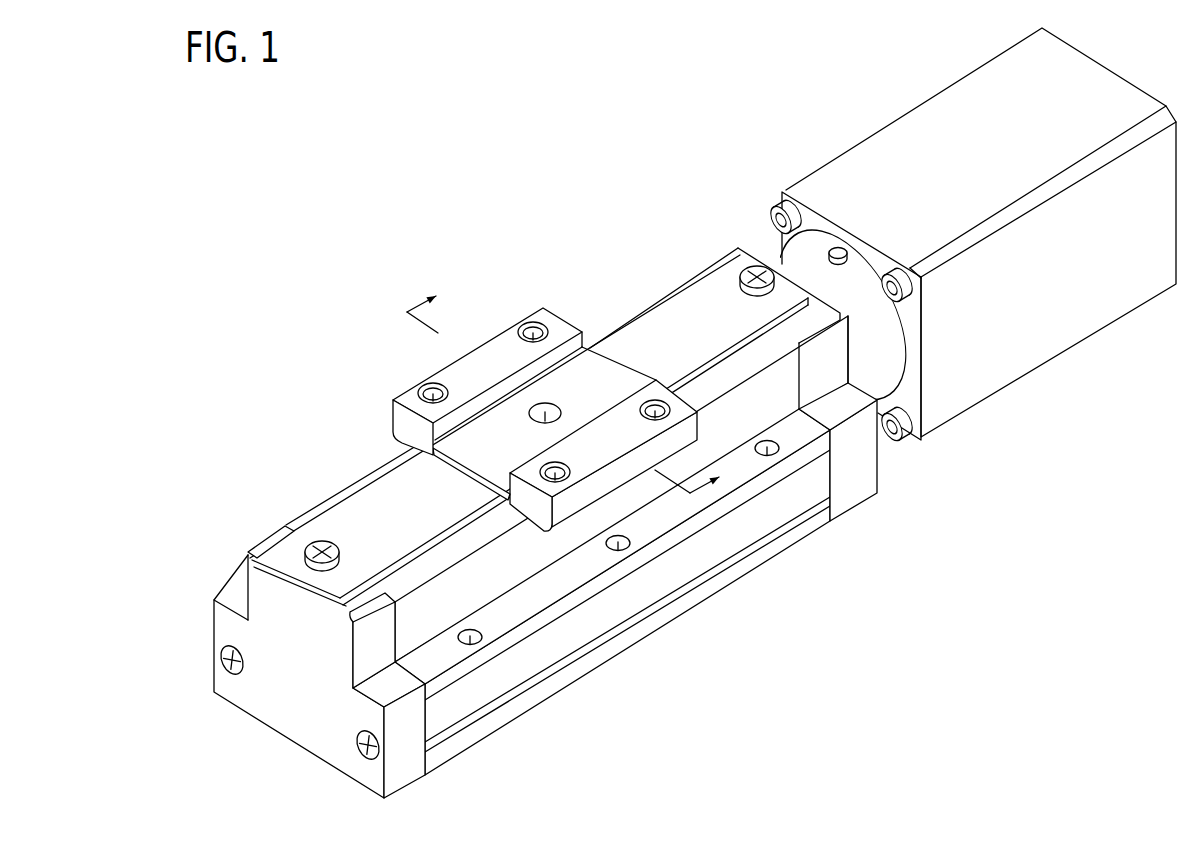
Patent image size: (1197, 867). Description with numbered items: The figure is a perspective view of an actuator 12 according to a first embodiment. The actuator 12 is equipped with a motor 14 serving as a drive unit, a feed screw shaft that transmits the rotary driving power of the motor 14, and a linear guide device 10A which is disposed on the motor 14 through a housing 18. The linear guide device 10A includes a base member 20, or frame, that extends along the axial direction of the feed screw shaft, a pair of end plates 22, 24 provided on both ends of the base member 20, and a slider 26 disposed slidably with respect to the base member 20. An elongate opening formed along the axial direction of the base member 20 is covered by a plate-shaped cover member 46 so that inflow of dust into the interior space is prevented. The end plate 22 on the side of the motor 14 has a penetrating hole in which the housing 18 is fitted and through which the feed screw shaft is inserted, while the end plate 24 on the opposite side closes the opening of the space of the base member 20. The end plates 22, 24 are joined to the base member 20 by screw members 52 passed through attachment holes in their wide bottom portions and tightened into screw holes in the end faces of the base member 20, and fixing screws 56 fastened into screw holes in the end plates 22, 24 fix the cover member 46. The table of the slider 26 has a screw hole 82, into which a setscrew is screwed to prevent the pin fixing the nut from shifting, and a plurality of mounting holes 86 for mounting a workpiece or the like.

The linear guide device 10A is at (377, 366).
The actuator 12 is at (414, 172).
The motor 14 is at (1078, 300).
The housing 18 is at (891, 347).
The base member 20 is at (558, 648).
The end plate 22 is at (855, 492).
The end plate 24 is at (407, 777).
The slider 26 is at (538, 305).
The cover member 46 is at (667, 317).
The screw member 52 is at (357, 733).
The fixing screw 56 is at (331, 543).
The screw hole 82 is at (547, 405).
The mounting hole 86 is at (522, 334).